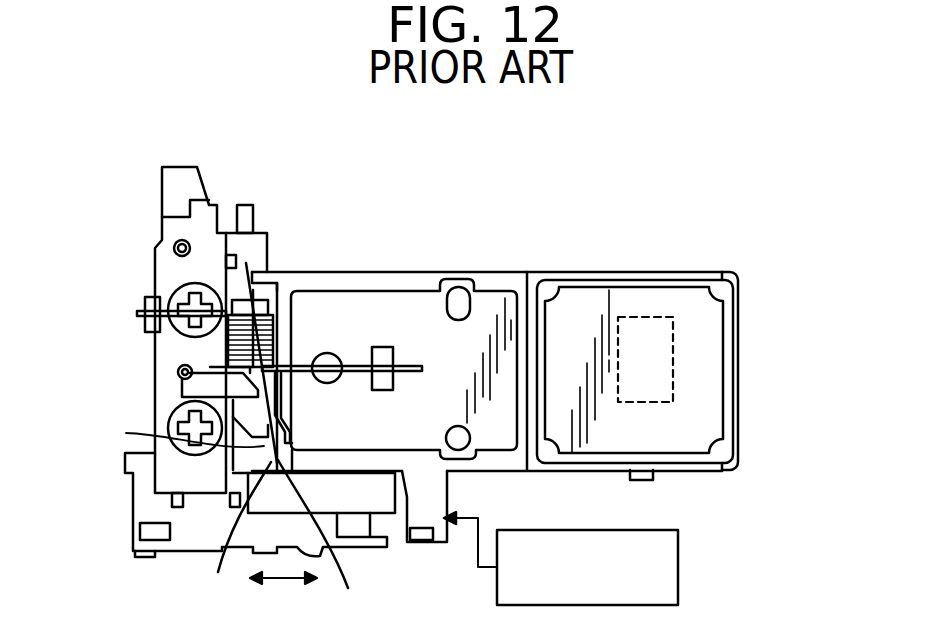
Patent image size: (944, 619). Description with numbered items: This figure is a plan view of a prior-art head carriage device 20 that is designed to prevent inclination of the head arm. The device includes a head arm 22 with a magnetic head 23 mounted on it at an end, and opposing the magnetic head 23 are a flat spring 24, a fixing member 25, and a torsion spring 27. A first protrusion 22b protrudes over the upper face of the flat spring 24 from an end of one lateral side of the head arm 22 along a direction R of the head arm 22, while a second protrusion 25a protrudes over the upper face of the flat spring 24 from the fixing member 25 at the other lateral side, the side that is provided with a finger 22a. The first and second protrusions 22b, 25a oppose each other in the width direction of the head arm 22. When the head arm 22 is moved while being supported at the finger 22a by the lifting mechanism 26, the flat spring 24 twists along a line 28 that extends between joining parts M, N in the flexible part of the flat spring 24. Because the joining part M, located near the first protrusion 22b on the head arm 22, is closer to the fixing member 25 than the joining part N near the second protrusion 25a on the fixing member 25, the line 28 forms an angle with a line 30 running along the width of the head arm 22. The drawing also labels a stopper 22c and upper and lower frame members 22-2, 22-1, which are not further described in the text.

The head carriage device 20 is at (616, 244).
The head arm 22 is at (510, 271).
The finger 22a is at (425, 482).
The first protrusion 22b is at (268, 263).
The stopper 22c is at (383, 347).
The lower frame member 22-1 is at (747, 466).
The upper frame member 22-2 is at (745, 274).
The magnetic head 23 is at (661, 363).
The flat spring 24 is at (295, 437).
The fixing member 25 is at (173, 351).
The second protrusion 25a is at (235, 540).
The lifting mechanism 26 is at (680, 573).
The torsion spring 27 is at (292, 368).
The line 28 is at (265, 446).
The line 30 is at (178, 381).
The joining part M is at (246, 263).
The joining part N is at (316, 539).
The direction R is at (283, 595).